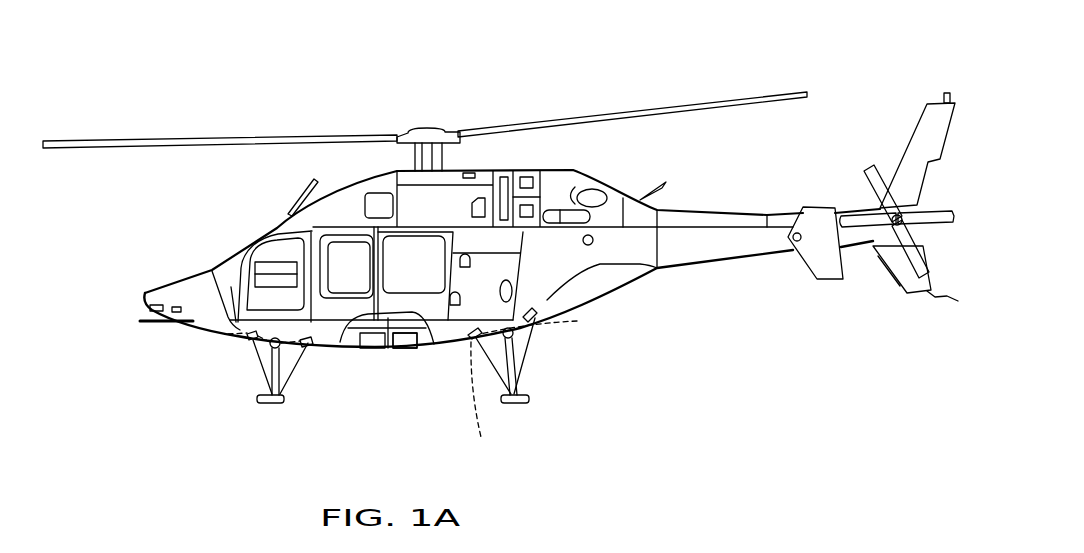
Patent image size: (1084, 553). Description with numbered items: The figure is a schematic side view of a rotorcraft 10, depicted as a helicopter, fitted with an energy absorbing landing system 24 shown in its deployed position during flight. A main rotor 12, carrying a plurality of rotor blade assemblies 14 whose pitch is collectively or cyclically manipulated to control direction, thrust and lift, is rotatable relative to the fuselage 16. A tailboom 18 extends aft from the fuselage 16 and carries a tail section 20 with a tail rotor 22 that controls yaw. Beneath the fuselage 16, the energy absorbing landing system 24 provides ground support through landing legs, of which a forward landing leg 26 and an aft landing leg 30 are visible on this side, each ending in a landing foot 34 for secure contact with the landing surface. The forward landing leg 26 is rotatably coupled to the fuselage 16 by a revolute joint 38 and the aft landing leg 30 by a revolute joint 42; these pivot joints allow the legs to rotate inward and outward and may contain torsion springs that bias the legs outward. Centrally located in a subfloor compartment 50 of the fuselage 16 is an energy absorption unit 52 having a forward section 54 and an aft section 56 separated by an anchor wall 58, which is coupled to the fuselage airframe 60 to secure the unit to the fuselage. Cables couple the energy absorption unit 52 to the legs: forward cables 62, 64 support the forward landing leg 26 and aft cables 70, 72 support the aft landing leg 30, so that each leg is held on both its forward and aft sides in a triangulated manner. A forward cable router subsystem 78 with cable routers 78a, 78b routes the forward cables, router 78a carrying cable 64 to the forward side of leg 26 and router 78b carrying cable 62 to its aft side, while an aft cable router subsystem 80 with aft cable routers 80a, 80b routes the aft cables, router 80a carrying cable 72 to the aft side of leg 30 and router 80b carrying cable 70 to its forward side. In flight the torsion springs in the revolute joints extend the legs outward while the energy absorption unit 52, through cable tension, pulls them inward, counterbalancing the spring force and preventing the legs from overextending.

The rotorcraft 10 is at (202, 66).
The main rotor 12 is at (423, 130).
The rotor blade assemblies 14 is at (100, 140).
The fuselage 16 is at (188, 277).
The tailboom 18 is at (712, 210).
The tail section 20 is at (909, 124).
The tail rotor 22 is at (877, 167).
The energy absorbing landing system 24 is at (385, 399).
The forward landing leg 26 is at (235, 402).
The aft landing leg 30 is at (520, 390).
The landing feet 34 is at (268, 404).
The revolute joint 38 is at (256, 350).
The revolute joint 42 is at (523, 335).
The subfloor compartment 50 is at (408, 378).
The energy absorption unit 52 is at (406, 350).
The forward section 54 is at (377, 348).
The aft section 56 is at (420, 340).
The anchor wall 58 is at (390, 345).
The fuselage airframe 60 is at (400, 322).
The forward cable 62 is at (286, 373).
The forward cable 64 is at (262, 370).
The aft cable 70 is at (492, 365).
The aft cable 72 is at (523, 362).
The forward cable router subsystem 78 is at (283, 322).
The cable router 78a is at (224, 339).
The cable router 78b is at (313, 348).
The aft cable router subsystem 80 is at (533, 297).
The aft cable router 80a is at (562, 321).
The aft cable router 80b is at (482, 397).